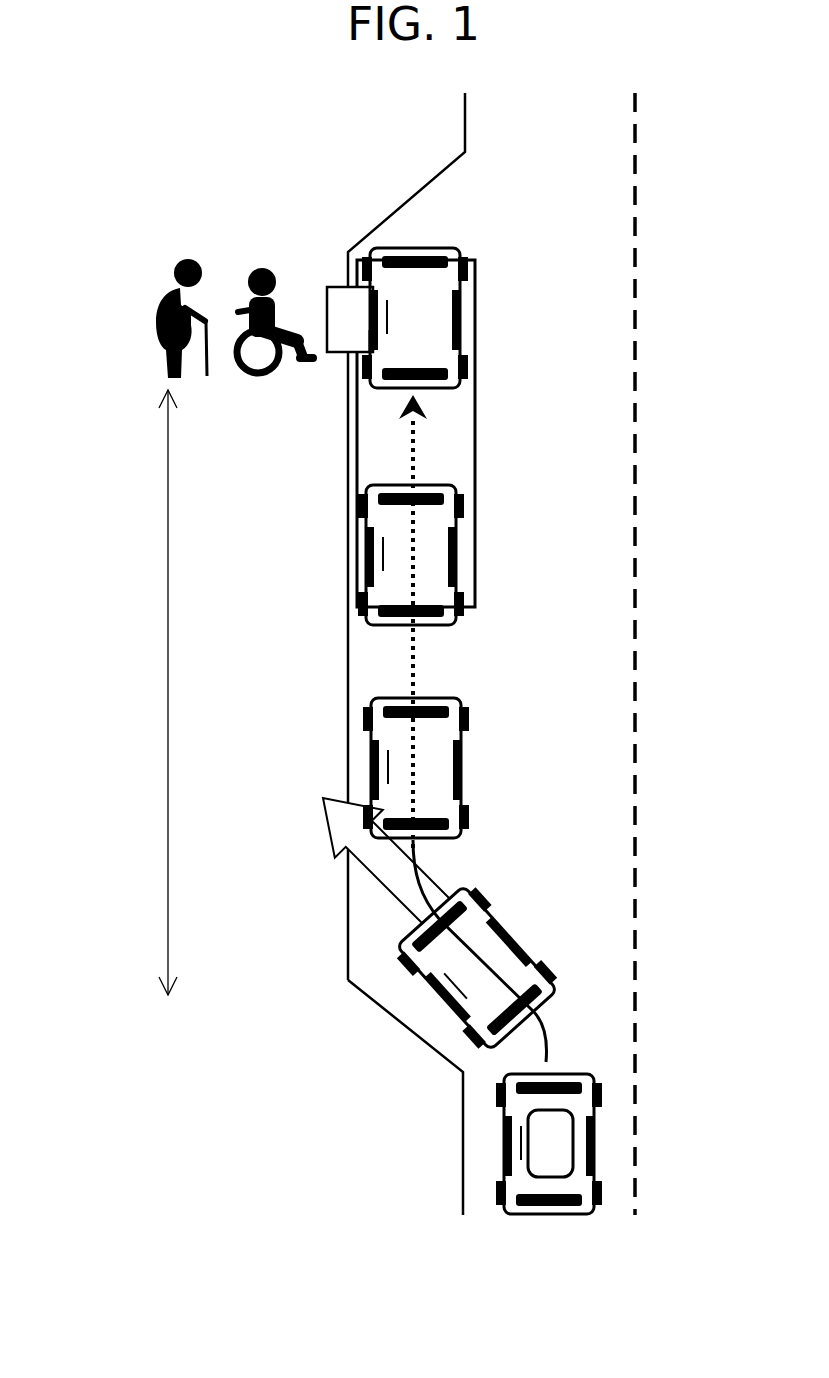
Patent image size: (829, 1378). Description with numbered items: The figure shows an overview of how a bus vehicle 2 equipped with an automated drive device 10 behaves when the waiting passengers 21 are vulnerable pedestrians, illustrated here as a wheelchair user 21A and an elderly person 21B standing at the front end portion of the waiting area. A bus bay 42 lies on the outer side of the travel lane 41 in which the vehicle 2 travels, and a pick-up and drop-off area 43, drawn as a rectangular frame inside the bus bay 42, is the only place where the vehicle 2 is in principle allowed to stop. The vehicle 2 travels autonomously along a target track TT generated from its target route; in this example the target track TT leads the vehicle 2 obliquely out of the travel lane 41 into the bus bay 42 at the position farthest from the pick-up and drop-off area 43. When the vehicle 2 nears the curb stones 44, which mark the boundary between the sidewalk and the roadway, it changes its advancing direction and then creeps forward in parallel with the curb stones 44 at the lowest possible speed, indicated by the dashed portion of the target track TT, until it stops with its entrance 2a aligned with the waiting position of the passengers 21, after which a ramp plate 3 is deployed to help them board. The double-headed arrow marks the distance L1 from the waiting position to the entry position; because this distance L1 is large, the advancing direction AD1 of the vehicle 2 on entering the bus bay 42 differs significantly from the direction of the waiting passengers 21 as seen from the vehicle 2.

The bus vehicle 2 is at (462, 333).
The entrance 2a is at (362, 338).
The ramp plate 3 is at (330, 288).
The automated drive device 10 is at (527, 1112).
The passengers 21 is at (224, 257).
The wheelchair user 21A is at (264, 285).
The elderly person 21B is at (190, 258).
The travel lane 41 is at (588, 685).
The bus bay 42 is at (348, 922).
The pick-up and drop-off area 43 is at (475, 425).
The curb stones 44 is at (347, 668).
The distance L1 is at (147, 692).
The advancing direction AD1 is at (328, 828).
The target track TT is at (420, 863).